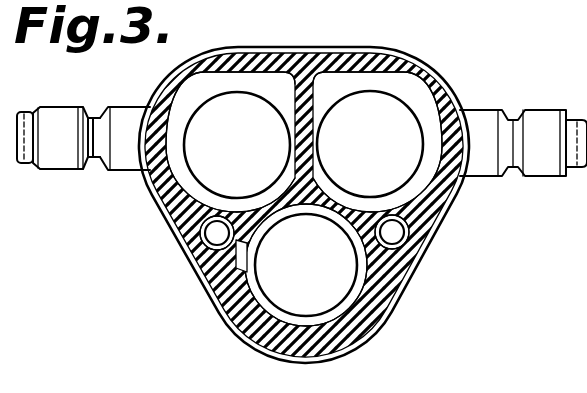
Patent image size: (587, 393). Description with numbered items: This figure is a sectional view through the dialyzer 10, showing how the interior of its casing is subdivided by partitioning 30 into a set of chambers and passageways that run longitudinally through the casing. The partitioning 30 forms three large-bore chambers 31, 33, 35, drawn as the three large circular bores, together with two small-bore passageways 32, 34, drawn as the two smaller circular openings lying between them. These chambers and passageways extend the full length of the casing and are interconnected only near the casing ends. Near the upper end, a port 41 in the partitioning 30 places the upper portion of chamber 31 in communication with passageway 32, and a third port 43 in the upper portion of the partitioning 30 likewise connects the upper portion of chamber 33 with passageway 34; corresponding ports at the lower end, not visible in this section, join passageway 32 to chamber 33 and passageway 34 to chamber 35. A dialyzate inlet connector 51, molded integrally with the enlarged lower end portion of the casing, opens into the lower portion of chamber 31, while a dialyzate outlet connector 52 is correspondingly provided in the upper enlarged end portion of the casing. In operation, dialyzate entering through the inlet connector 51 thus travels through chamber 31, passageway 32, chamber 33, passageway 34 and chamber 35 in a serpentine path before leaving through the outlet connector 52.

The manifold body 10 is at (231, 344).
The partitioning 30 is at (321, 122).
The large-bore chamber 31 is at (376, 122).
The small-bore passageway 32 is at (395, 234).
The large-bore chamber 33 is at (320, 290).
The small-bore passageway 34 is at (215, 235).
The large-bore chamber 35 is at (249, 108).
The port 41 is at (400, 215).
The third port 43 is at (247, 245).
The dialyzate inlet connector 51 is at (540, 163).
The dialyzate outlet connector 52 is at (69, 156).